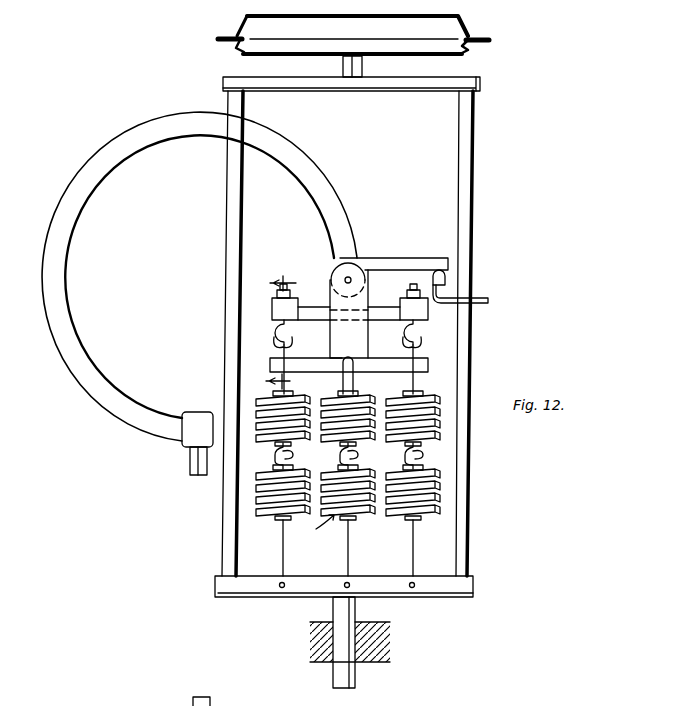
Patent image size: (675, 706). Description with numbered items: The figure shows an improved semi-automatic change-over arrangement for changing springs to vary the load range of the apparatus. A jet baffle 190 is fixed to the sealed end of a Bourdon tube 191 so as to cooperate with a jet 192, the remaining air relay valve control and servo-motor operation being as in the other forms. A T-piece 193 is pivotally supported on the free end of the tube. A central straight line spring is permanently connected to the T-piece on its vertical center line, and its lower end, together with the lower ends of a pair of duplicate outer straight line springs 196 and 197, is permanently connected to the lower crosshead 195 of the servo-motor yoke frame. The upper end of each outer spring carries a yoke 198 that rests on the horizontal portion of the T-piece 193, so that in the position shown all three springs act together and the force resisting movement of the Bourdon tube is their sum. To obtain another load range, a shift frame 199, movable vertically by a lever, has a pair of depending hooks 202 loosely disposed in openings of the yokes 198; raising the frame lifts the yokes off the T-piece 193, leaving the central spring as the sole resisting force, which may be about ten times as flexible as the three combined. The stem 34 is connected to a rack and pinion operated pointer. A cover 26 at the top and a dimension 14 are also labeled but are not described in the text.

The cover cap 26 is at (248, 22).
The Bourdon tube 191 is at (122, 148).
The jet baffle 190 is at (389, 262).
The jet 192 is at (433, 279).
The T-piece 193 is at (333, 338).
The shift frame 199 is at (319, 315).
The depending hooks 202 is at (277, 330).
The yoke 198 is at (274, 346).
The spacing dimension 14 is at (287, 324).
The straight line spring 197 is at (269, 523).
The straight line spring 196 is at (405, 525).
The lower crosshead 195 is at (384, 584).
The stem 34 is at (333, 675).